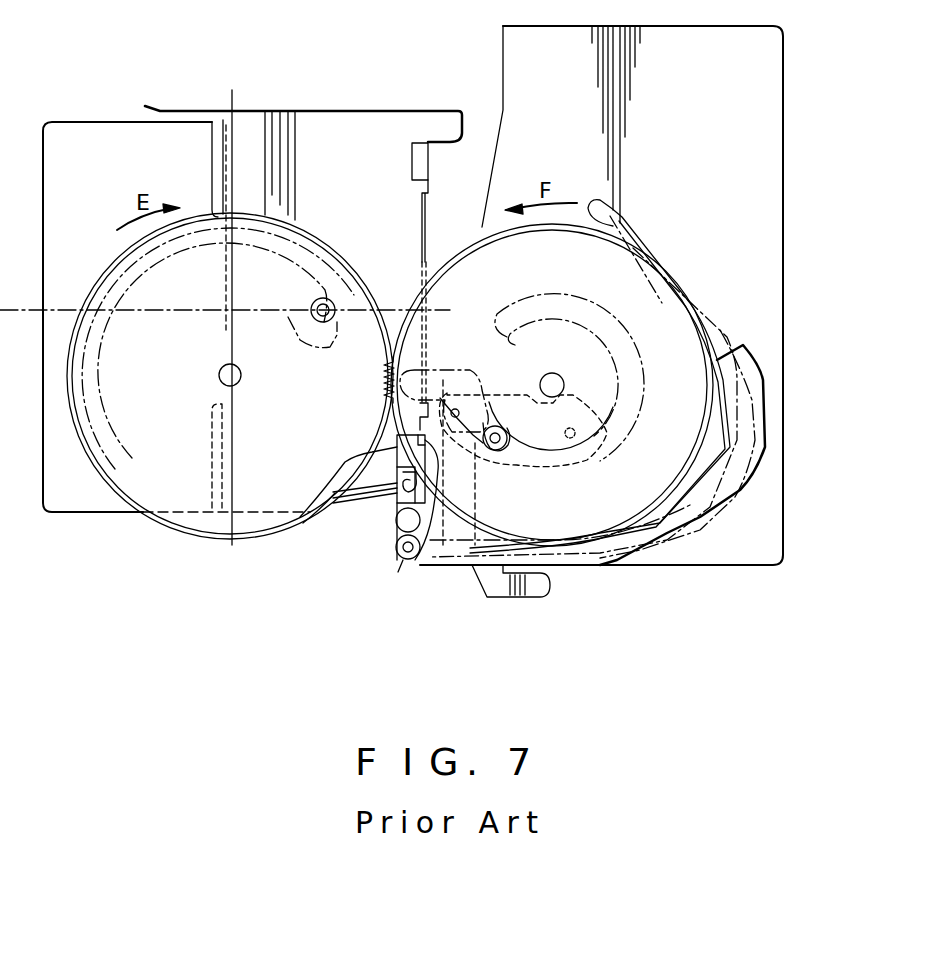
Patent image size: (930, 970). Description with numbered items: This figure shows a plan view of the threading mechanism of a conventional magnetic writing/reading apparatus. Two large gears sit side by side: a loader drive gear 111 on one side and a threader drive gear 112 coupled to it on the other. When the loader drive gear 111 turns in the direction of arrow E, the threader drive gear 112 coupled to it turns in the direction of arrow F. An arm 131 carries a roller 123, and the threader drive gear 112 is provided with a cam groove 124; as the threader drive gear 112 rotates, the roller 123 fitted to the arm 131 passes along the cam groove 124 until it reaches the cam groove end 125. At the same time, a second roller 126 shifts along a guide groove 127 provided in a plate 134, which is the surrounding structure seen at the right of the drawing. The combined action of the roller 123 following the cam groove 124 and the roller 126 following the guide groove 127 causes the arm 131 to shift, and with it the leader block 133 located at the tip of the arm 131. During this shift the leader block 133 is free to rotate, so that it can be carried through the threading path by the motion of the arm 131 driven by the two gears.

The loader drive gear 111 is at (267, 497).
The threader drive gear 112 is at (665, 320).
The roller 123 is at (500, 453).
The cam groove 124 is at (638, 390).
The cam groove end 125 is at (443, 367).
The roller 126 is at (402, 556).
The guide groove 127 is at (662, 533).
The arm 131 is at (547, 592).
The leader block 133 is at (400, 517).
The plate 134 is at (783, 313).